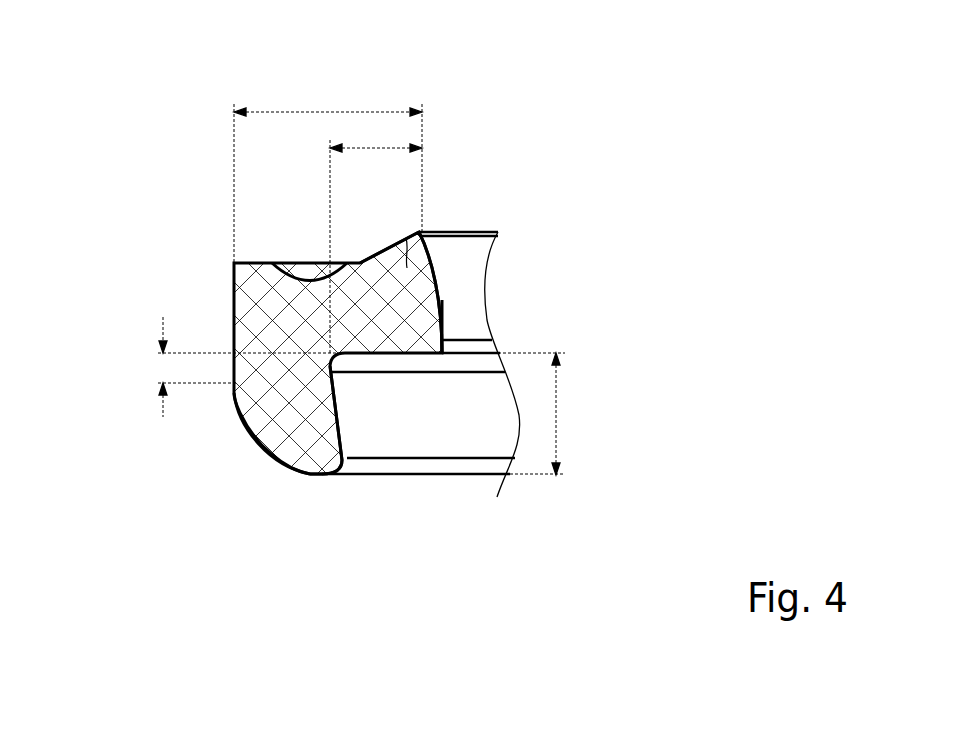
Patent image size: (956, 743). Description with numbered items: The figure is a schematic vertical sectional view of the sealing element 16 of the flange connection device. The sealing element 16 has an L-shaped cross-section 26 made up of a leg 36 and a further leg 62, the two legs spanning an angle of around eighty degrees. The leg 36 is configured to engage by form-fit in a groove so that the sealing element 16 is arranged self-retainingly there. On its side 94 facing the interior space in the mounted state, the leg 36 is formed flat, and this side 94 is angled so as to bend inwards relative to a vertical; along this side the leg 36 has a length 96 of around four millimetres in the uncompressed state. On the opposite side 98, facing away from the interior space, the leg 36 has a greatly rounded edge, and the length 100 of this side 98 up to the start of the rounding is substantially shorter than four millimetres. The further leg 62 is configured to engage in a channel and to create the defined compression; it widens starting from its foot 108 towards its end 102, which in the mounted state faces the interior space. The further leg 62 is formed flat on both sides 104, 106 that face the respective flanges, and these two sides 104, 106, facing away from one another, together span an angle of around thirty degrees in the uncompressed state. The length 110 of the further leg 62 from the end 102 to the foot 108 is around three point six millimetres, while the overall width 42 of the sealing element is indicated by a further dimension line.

The sealing element 16 is at (246, 379).
The L-shaped cross-section 26 is at (445, 496).
The leg 36 is at (290, 418).
The overall width 42 is at (302, 112).
The further leg 62 is at (419, 232).
The side facing the interior space 94 is at (340, 430).
The length 96 is at (558, 412).
The side facing away from the interior space 98 is at (257, 390).
The length 100 is at (158, 370).
The end 102 is at (454, 317).
The side facing the flange 104 is at (373, 257).
The side facing the further flange 106 is at (400, 353).
The foot 108 is at (343, 292).
The length 110 is at (378, 148).